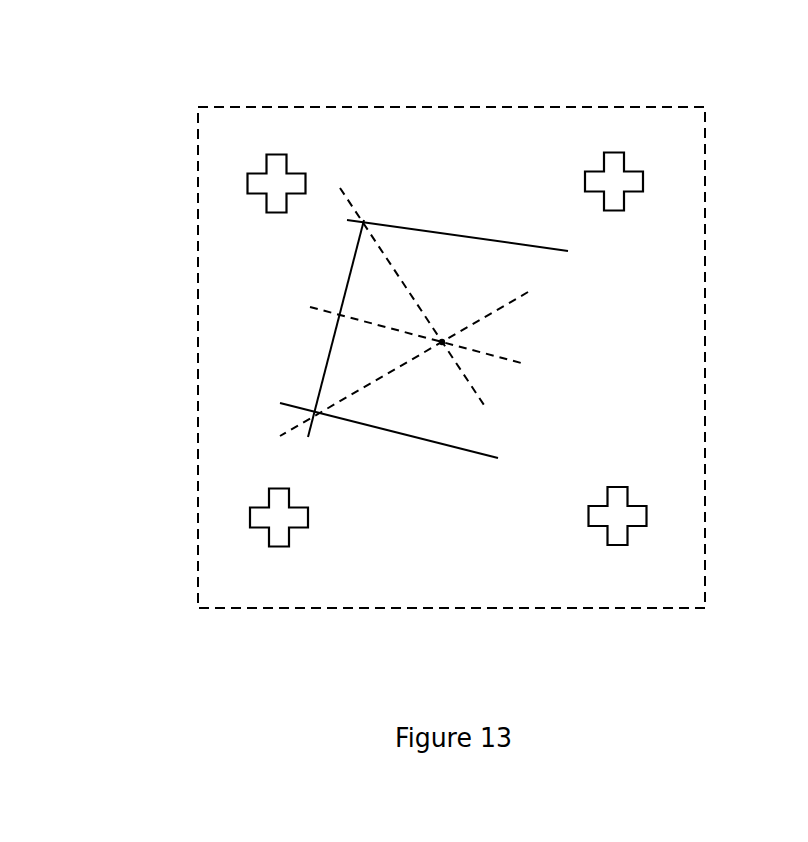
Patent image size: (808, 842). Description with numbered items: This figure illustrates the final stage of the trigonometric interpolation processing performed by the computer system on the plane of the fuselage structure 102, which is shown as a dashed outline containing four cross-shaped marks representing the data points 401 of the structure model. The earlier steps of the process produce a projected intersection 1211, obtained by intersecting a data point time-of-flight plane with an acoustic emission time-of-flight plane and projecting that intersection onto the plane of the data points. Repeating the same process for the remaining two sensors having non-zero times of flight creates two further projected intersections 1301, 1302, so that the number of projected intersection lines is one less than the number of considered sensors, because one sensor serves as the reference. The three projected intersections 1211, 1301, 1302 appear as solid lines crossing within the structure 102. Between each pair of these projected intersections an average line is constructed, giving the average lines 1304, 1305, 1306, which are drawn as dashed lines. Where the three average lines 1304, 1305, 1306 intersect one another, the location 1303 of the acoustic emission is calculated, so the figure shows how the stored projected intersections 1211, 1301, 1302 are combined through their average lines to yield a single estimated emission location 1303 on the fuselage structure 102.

The fuselage structure 102 is at (272, 105).
The data points 401 is at (253, 193).
The projected intersection 1211 is at (327, 358).
The projected intersection 1301 is at (388, 432).
The projected intersection 1302 is at (470, 238).
The location of the acoustic emission 1303 is at (442, 342).
The average line 1304 is at (508, 360).
The average line 1305 is at (510, 300).
The average line 1306 is at (390, 262).